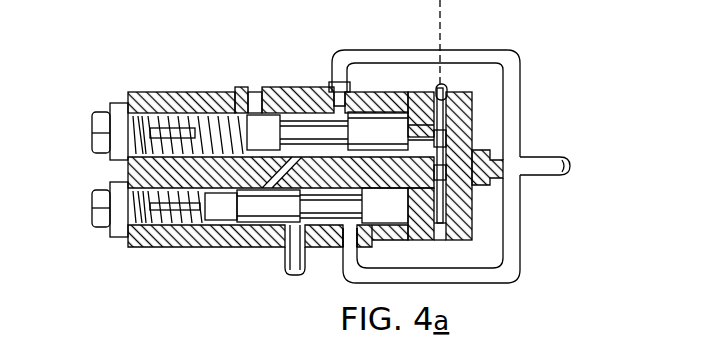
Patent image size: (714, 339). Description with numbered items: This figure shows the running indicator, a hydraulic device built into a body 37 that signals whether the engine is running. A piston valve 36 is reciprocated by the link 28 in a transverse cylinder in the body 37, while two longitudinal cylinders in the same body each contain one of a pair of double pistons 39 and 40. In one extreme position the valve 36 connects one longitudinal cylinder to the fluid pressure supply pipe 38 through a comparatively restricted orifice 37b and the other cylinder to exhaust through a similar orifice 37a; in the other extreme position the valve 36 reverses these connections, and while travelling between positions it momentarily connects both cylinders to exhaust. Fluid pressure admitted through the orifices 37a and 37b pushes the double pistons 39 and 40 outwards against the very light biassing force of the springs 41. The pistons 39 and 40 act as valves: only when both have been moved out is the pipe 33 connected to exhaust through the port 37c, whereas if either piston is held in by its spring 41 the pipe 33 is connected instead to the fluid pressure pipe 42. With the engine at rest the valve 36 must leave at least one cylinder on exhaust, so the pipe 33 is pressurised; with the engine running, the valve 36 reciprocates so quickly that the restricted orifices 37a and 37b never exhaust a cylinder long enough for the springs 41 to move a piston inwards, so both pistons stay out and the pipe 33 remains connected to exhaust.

The link 28 is at (446, 28).
The pipe 33 is at (288, 270).
The piston valve 36 is at (521, 200).
The body 37 is at (200, 97).
The orifice 37a is at (420, 130).
The orifice 37b is at (423, 240).
The port 37c is at (256, 92).
The fluid pressure supply pipe 38 is at (487, 156).
The double piston 39 is at (370, 113).
The double piston 40 is at (267, 202).
The springs 41 is at (128, 181).
The fluid pressure pipe 42 is at (548, 164).